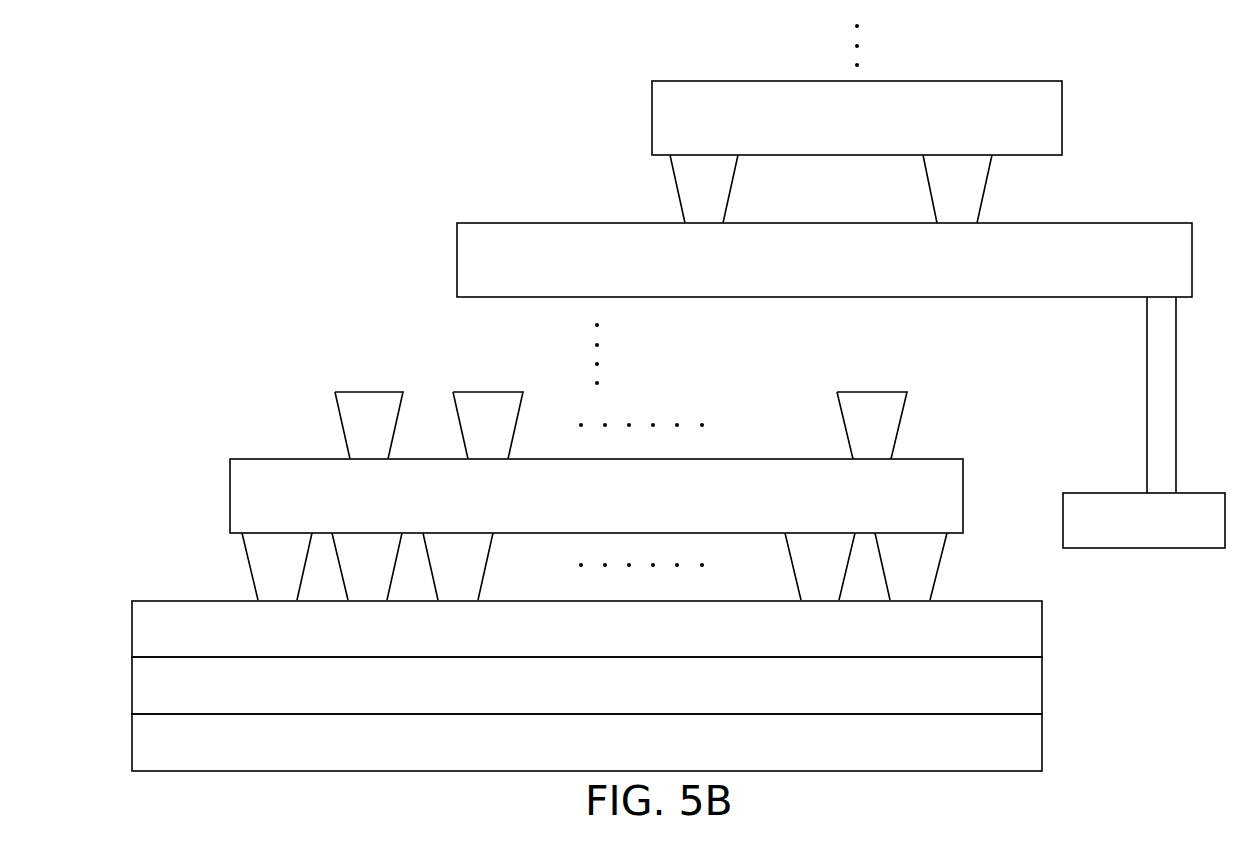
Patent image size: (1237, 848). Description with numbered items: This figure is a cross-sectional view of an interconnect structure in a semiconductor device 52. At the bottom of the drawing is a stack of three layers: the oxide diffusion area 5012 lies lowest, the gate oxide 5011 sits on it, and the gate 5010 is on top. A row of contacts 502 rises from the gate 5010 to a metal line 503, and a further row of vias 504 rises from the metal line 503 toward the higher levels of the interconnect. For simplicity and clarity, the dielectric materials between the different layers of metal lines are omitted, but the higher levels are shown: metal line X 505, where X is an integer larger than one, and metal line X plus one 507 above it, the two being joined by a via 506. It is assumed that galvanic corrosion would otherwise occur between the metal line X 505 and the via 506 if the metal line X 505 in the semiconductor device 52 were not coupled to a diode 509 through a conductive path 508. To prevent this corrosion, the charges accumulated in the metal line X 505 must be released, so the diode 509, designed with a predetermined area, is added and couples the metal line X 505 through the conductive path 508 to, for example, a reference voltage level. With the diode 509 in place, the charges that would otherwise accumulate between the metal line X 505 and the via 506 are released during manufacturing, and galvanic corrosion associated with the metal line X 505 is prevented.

The semiconductor device 52 is at (70, 48).
The contacts 502 is at (250, 566).
The metal line 503 is at (605, 503).
The vias 504 is at (342, 424).
The metal line X 505 is at (844, 275).
The via 506 is at (677, 188).
The metal line X+1 507 is at (874, 135).
The conductive path 508 is at (1147, 370).
The diode 509 is at (1162, 537).
The gate 5010 is at (612, 643).
The gate oxide 5011 is at (612, 700).
The oxide diffusion area 5012 is at (612, 757).